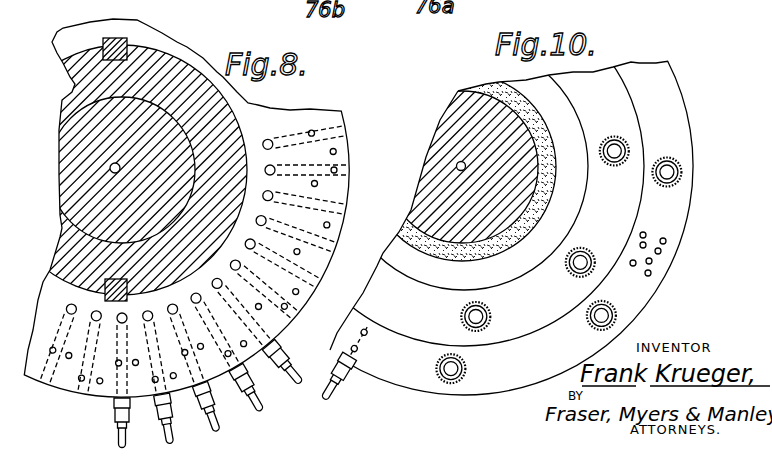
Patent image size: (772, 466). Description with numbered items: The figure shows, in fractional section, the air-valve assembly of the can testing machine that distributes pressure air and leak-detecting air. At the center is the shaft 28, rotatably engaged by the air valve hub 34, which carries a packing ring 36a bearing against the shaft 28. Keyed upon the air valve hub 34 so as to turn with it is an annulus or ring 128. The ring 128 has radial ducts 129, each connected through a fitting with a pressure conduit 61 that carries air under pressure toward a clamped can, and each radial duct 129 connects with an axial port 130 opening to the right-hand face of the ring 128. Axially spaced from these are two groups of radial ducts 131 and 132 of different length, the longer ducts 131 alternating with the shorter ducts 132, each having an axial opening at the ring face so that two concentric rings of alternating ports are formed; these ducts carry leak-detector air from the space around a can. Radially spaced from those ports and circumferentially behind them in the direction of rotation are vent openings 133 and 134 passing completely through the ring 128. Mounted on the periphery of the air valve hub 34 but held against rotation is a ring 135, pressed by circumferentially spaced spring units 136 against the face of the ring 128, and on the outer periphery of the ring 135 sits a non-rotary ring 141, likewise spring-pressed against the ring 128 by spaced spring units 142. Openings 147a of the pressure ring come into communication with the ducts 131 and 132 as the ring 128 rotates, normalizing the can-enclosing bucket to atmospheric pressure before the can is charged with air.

In FIG. 8, the shaft 28 is at (72, 133).
In FIG. 10, the shaft 28 is at (432, 178).
In FIG. 8, the air valve hub 34 is at (147, 62).
In FIG. 8, the annulus or ring 128 is at (250, 109).
In FIG. 8, the radial ducts 129 is at (92, 320).
In FIG. 8, the axial port or duct 130 is at (60, 383).
In FIG. 8, the radial ducts 131 is at (135, 366).
In FIG. 8, the radial ducts 132 is at (186, 356).
In FIG. 8, the vent openings 133 is at (315, 181).
In FIG. 8, the vent openings 134 is at (329, 222).
In FIG. 8, the hose or pressure conduit 61 is at (214, 427).
In FIG. 10, the packing ring 36a is at (541, 198).
In FIG. 10, the annulus or ring 135 is at (484, 186).
In FIG. 10, the spring units 136 is at (464, 173).
In FIG. 10, the ring 141 is at (505, 232).
In FIG. 10, the spring units 142 is at (617, 315).
In FIG. 10, the openings 147a is at (665, 241).